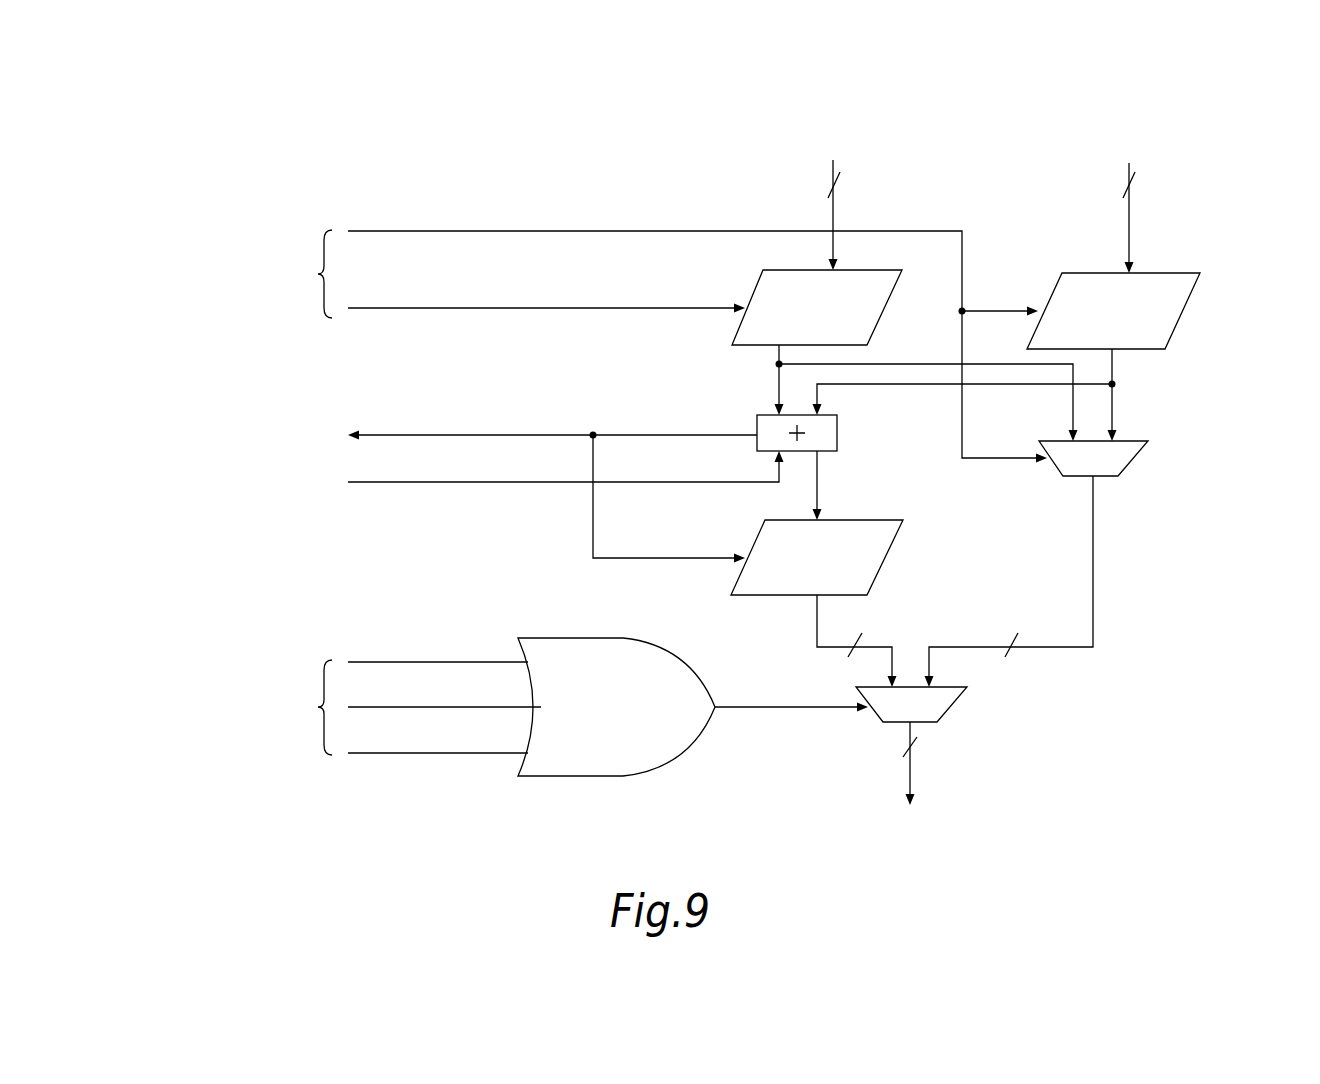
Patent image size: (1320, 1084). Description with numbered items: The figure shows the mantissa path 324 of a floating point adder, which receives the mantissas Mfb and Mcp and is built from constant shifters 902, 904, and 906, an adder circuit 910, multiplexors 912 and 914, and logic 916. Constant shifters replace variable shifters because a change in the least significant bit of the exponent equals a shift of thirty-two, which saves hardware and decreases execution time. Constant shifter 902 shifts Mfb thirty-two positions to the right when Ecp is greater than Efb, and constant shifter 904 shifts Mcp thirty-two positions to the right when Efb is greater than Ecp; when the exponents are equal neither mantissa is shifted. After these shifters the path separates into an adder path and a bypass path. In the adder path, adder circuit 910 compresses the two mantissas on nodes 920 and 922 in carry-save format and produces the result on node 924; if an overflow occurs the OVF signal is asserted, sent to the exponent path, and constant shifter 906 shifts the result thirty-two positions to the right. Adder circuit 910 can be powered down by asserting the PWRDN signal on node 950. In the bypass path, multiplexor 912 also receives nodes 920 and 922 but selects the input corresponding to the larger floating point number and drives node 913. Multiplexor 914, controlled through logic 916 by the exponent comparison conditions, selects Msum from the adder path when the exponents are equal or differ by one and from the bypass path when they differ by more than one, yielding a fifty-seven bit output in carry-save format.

The mantissa path 324 is at (227, 128).
The constant shifter 902 is at (750, 347).
The constant shifter 904 is at (1182, 307).
The constant shifter 906 is at (780, 597).
The adder circuit 910 is at (838, 430).
The multiplexor 912 is at (1125, 468).
The node 913 is at (1093, 555).
The multiplexor 914 is at (943, 715).
The logic 916 is at (572, 777).
The node 920 is at (778, 388).
The node 922 is at (1113, 365).
The node 924 is at (818, 476).
The node 950 is at (530, 483).